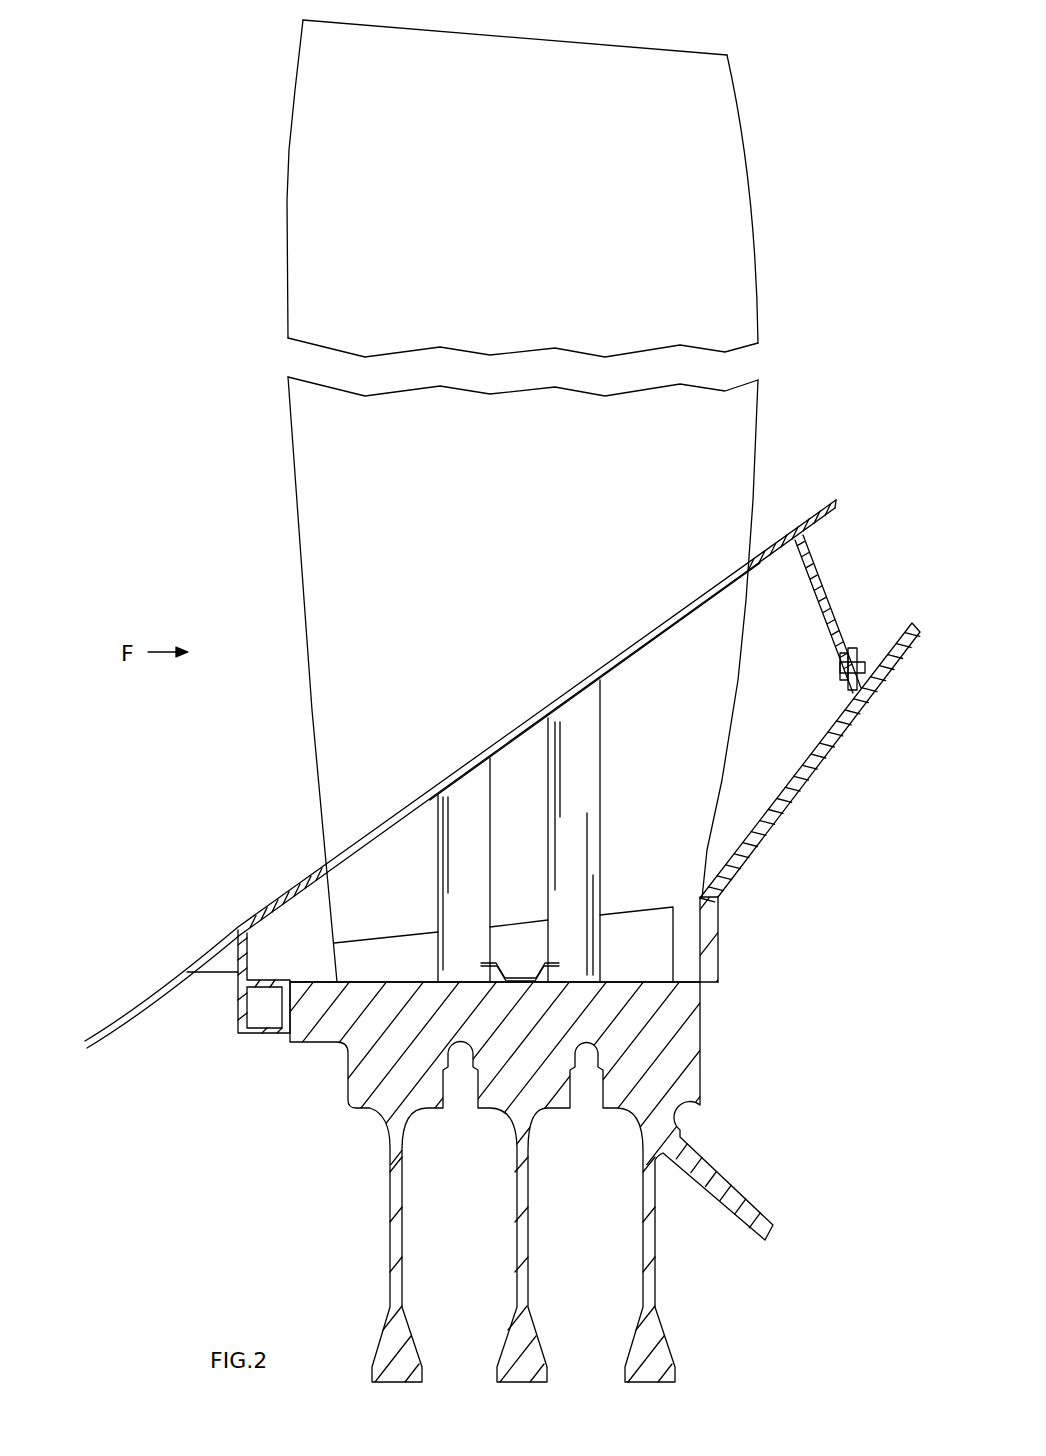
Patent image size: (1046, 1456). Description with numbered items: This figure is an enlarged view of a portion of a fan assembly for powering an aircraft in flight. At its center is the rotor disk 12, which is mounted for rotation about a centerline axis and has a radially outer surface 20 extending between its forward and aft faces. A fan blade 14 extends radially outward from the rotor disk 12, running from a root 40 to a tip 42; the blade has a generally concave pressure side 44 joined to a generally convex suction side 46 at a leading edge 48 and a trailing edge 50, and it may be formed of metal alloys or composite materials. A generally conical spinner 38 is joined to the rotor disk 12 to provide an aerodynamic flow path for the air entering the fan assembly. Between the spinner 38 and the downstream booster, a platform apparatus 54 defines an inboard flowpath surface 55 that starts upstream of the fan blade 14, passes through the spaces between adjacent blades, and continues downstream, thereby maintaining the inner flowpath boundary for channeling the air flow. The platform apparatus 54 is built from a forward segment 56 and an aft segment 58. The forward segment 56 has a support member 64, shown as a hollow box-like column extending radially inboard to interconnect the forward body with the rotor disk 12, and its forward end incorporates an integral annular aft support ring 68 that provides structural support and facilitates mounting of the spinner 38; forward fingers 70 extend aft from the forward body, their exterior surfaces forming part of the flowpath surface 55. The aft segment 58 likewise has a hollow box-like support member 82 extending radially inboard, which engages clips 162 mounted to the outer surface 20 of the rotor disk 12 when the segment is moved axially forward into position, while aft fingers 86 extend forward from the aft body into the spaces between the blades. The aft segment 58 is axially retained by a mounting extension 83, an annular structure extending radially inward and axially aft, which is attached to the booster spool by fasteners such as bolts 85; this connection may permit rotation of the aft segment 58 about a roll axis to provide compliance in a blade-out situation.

The rotor disk 12 is at (348, 1100).
The fan blade 14 is at (528, 496).
The radially outer surface 20 is at (645, 980).
The spinner 38 is at (162, 994).
The root 40 is at (352, 940).
The tip 42 is at (593, 42).
The pressure side 44 is at (518, 246).
The suction side 46 is at (320, 184).
The leading edge 48 is at (289, 449).
The trailing edge 50 is at (760, 423).
The platform apparatus 54 is at (353, 788).
The inboard flowpath surface 55 is at (782, 534).
The forward segment 56 is at (312, 877).
The aft segment 58 is at (775, 552).
The support member 64 is at (440, 868).
The aft support ring 68 is at (240, 1022).
The forward finger 70 is at (446, 790).
The support member 82 is at (598, 808).
The mounting extension 83 is at (825, 578).
The bolt 85 is at (838, 670).
The aft finger 86 is at (668, 620).
The clip 162 is at (520, 975).